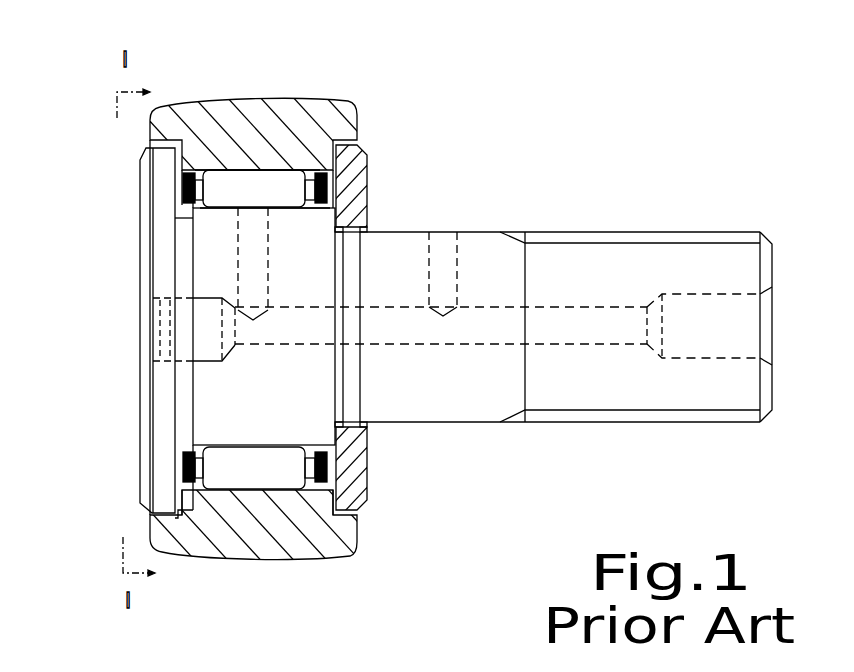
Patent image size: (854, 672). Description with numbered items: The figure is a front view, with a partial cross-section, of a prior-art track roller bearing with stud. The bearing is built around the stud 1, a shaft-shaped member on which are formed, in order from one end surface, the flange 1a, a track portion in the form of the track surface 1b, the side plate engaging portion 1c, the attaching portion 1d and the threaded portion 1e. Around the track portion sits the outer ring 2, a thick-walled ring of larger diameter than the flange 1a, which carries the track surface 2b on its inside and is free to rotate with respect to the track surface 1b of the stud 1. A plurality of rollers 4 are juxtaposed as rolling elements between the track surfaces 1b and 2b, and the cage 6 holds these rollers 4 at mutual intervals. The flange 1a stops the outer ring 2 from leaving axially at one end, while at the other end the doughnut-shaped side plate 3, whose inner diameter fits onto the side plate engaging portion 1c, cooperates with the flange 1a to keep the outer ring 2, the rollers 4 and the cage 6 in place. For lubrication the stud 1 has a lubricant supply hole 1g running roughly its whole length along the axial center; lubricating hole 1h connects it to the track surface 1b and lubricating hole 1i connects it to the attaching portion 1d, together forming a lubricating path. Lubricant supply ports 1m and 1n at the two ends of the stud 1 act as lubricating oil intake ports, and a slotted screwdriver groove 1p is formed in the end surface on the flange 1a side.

The stud 1 is at (594, 220).
The flange 1a is at (162, 210).
The track surface 1b is at (290, 214).
The side plate engaging portion 1c is at (352, 253).
The attaching portion 1d is at (480, 252).
The threaded portion 1e is at (676, 240).
The lubricant supply hole 1g is at (448, 343).
The lubricating hole 1h is at (243, 257).
The lubricating hole 1i is at (455, 267).
The lubricant supply port 1m is at (185, 363).
The lubricant supply port 1n is at (723, 358).
The slotted screwdriver groove 1p is at (150, 345).
The outer ring 2 is at (333, 137).
The track surface 2b is at (236, 174).
The side plate 3 is at (362, 198).
The rollers 4 is at (254, 180).
The cage 6 is at (190, 488).